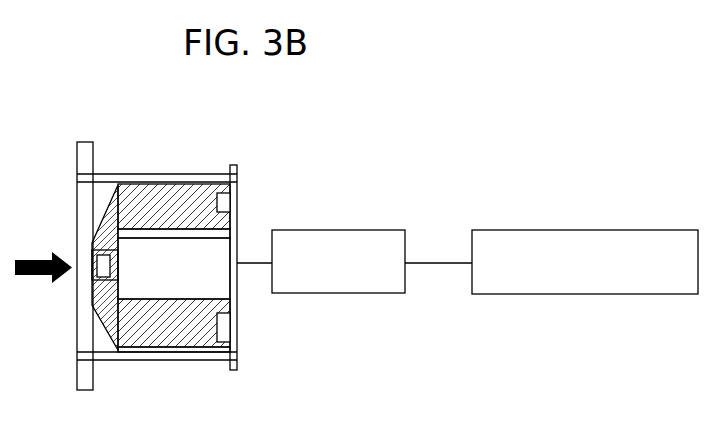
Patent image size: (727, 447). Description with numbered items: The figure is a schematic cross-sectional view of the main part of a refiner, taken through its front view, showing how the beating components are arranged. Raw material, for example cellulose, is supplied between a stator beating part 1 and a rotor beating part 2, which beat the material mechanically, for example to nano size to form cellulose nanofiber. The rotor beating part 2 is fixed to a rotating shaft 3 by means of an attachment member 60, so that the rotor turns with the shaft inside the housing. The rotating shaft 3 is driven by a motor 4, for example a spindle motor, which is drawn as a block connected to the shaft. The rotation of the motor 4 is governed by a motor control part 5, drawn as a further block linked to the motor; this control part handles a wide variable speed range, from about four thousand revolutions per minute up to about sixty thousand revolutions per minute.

The stator beating part 1 is at (108, 185).
The rotor beating part 2 is at (170, 203).
The rotating shaft 3 is at (163, 272).
The motor 4 is at (343, 242).
The motor control part 5 is at (603, 242).
The attachment member 60 is at (105, 305).